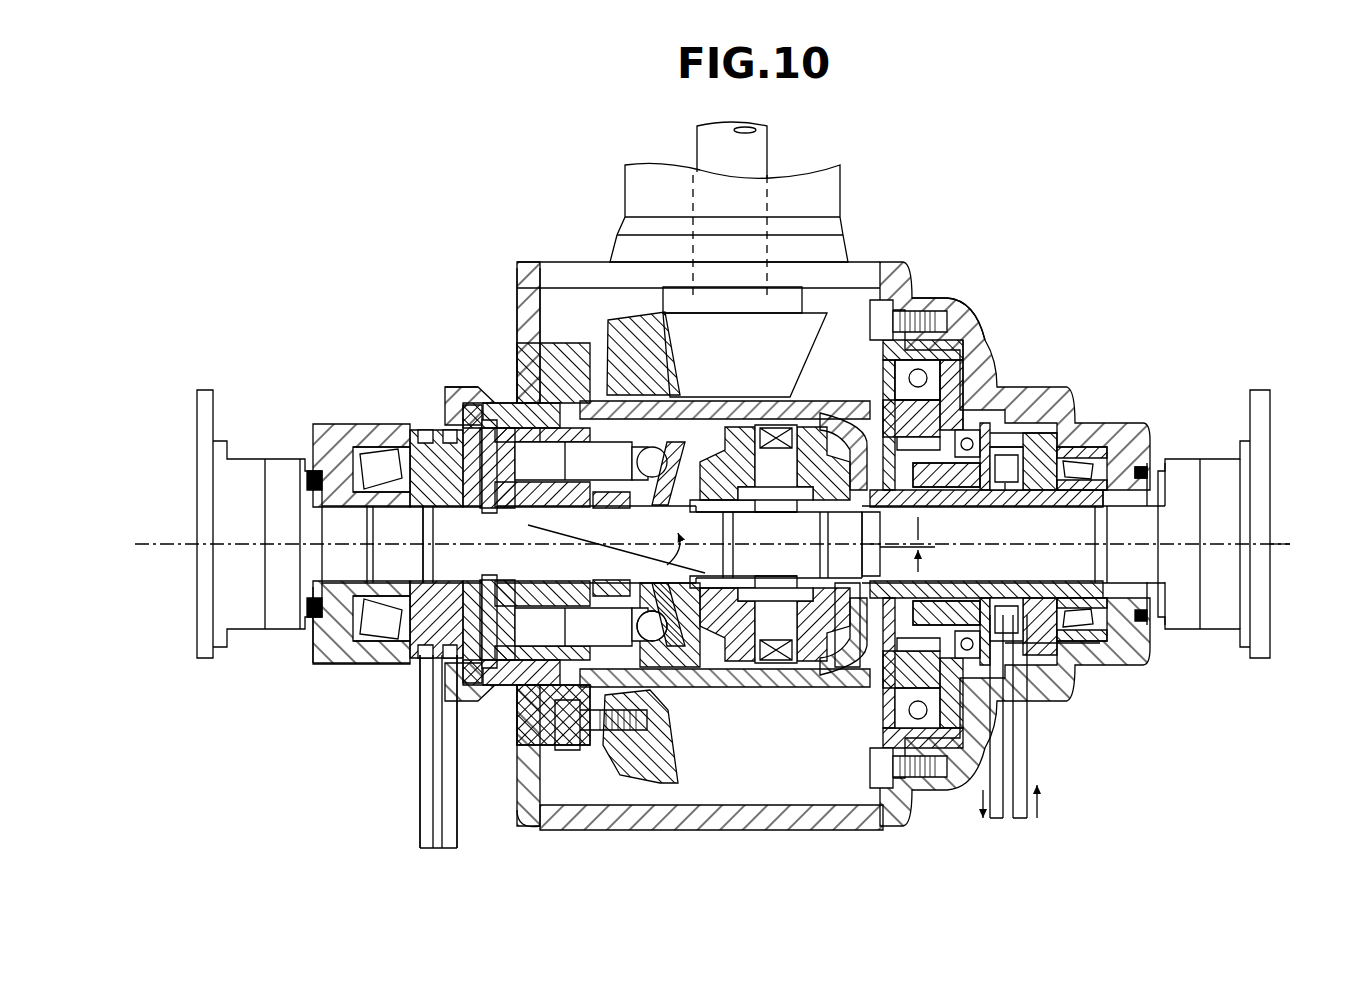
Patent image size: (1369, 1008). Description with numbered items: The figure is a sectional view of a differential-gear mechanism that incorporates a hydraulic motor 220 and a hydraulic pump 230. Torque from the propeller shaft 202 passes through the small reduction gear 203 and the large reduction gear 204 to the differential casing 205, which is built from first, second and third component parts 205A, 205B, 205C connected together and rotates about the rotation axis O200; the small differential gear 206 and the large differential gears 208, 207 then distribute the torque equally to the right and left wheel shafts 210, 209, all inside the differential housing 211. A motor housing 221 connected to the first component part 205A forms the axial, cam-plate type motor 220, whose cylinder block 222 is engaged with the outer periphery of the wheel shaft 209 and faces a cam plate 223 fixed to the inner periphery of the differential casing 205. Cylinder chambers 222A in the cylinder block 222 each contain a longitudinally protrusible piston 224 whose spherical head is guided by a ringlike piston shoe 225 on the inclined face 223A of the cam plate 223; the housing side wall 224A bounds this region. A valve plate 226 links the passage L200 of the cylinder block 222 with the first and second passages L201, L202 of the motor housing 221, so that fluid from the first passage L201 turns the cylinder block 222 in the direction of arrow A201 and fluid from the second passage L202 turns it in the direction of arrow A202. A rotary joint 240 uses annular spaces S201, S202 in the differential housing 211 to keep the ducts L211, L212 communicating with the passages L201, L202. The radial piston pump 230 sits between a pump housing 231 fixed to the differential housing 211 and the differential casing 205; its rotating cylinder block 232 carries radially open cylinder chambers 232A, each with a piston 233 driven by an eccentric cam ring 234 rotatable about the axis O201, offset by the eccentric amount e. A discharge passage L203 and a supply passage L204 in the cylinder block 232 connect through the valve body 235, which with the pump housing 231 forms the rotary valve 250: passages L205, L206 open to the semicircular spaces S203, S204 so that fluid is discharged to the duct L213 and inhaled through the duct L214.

The propeller shaft 202 is at (760, 148).
The small reduction gear 203 is at (817, 300).
The large reduction gear 204 is at (618, 333).
The differential casing 205 is at (925, 893).
The first component part 205A is at (727, 770).
The second component part 205B is at (790, 735).
The third component part 205C is at (850, 675).
The small differential gear 206 is at (800, 397).
The large differential gear 207 is at (785, 665).
The large differential gear 208 is at (895, 440).
The wheel shaft 209 is at (383, 522).
The wheel shaft 210 is at (1137, 513).
The differential housing 211 is at (900, 267).
The motor 220 is at (475, 403).
The motor housing 221 is at (543, 680).
The cylinder block 222 is at (502, 403).
The cylinder chambers 222A is at (450, 657).
The cam plate 223 is at (680, 668).
The inclined face 223A is at (687, 407).
The piston 224 is at (535, 395).
The housing side wall 224A is at (517, 313).
The piston shoe 225 is at (660, 725).
The valve plate 226 is at (443, 420).
The pump 230 is at (950, 335).
The pump housing 231 is at (975, 405).
The cylinder block 232 is at (965, 445).
The cylinder chambers 232A is at (960, 465).
The piston 233 is at (883, 340).
The eccentric cam ring 234 is at (960, 357).
The valve body 235 is at (1145, 628).
The rotary joint 240 is at (413, 432).
The rotary valve 250 is at (1010, 477).
The passage L200 is at (500, 478).
The first passage L201 is at (440, 600).
The second passage L202 is at (538, 583).
The discharge passage L203 is at (935, 610).
The supply passage L204 is at (990, 450).
The passage L205 is at (1080, 615).
The passage L206 is at (1012, 485).
The duct L211 is at (458, 820).
The duct L212 is at (420, 800).
The duct L213 is at (993, 813).
The duct L214 is at (1020, 813).
The annular space S201 is at (420, 660).
The annular space S202 is at (420, 653).
The semicircular space S203 is at (1033, 657).
The semicircular space S204 is at (1047, 483).
The rotation axis O200 is at (1285, 540).
The axis O201 is at (853, 672).
The arrow A201 is at (133, 507).
The arrow A202 is at (172, 580).
The eccentric amount e is at (907, 544).